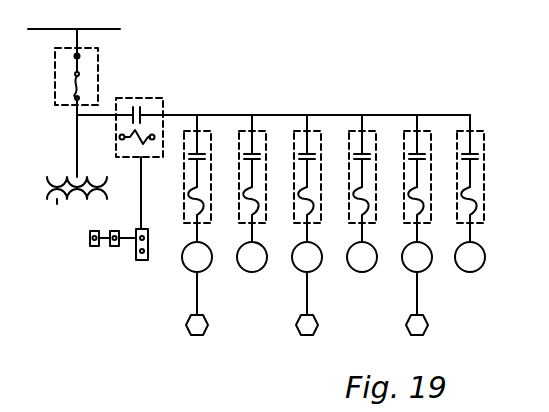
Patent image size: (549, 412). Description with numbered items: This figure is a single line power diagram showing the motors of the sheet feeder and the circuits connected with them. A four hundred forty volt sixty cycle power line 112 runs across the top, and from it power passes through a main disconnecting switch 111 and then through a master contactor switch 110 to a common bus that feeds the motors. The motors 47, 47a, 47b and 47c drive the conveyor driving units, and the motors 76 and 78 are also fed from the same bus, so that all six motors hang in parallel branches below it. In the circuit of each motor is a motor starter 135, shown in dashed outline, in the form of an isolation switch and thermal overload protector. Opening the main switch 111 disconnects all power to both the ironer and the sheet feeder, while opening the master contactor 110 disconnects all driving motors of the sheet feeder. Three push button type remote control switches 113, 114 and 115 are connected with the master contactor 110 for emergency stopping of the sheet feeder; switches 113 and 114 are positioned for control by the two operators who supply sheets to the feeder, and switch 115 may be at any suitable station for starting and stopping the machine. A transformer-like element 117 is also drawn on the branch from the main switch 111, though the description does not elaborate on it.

The power line 112 is at (120, 32).
The main disconnecting switch 111 is at (99, 78).
The master contactor switch 110 is at (153, 100).
The transformer 117 is at (73, 201).
The remote control switch 113 is at (88, 240).
The remote control switch 114 is at (112, 248).
The remote control switch 115 is at (141, 262).
The motor starter 135 is at (410, 131).
The motor 47 is at (207, 268).
The motor 76 is at (262, 268).
The motor 47a is at (317, 268).
The motor 47b is at (372, 268).
The motor 47c is at (427, 268).
The motor 78 is at (480, 268).